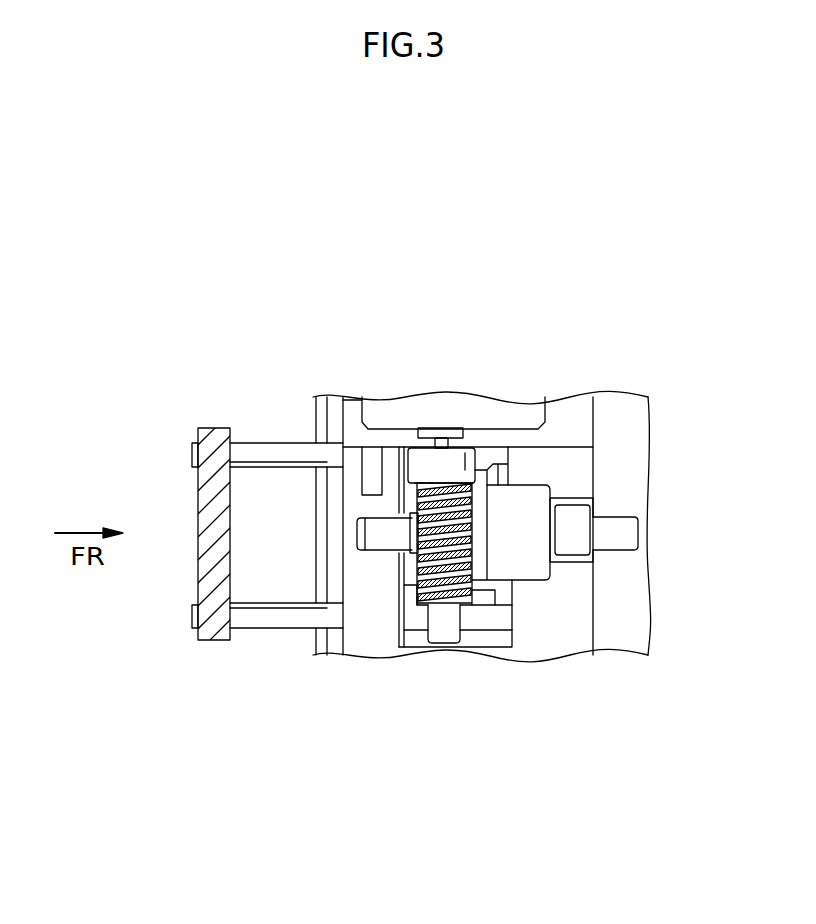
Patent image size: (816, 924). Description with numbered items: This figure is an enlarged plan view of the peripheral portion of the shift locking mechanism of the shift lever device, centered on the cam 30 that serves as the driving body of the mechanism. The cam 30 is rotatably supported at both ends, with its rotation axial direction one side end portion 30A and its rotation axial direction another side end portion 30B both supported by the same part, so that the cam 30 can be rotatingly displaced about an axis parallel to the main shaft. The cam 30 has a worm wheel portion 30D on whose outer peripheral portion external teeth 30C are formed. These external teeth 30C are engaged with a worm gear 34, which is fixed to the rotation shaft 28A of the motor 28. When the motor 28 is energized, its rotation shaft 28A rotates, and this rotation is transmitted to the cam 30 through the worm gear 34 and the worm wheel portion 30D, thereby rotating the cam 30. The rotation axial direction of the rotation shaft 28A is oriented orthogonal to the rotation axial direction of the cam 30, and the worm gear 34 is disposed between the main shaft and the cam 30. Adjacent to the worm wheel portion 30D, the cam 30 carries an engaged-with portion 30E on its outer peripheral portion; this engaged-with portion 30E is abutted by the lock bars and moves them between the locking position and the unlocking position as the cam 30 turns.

The motor 28 is at (546, 412).
The rotation shaft 28A is at (452, 444).
The cam 30 is at (533, 572).
The rotation axial direction one side end portion 30A is at (387, 527).
The rotation axial direction another side end portion 30B is at (617, 537).
The external teeth 30C is at (519, 653).
The worm wheel portion 30D is at (444, 624).
The engaged-with portion 30E is at (525, 520).
The worm gear 34 is at (417, 593).